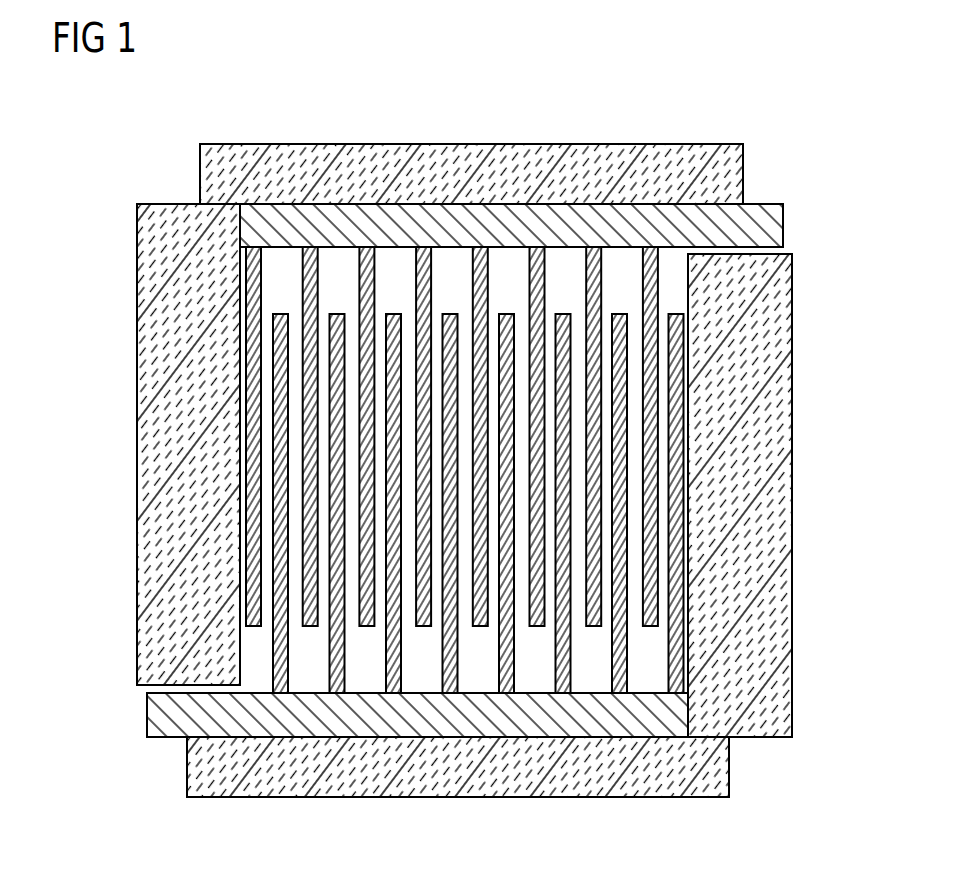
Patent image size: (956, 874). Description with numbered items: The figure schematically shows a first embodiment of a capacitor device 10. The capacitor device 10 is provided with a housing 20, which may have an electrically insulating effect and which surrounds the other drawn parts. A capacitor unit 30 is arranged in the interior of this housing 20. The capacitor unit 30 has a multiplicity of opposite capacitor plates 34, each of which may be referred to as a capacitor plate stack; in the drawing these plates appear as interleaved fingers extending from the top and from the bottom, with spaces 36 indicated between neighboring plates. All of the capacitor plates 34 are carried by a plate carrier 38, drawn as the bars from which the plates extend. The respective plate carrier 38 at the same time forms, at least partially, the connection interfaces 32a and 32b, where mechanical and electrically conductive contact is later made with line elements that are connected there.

The capacitor device 10 is at (112, 156).
The housing 20 is at (308, 153).
The capacitor unit 30 is at (239, 427).
The connection interface 32a is at (781, 187).
The connection interface 32b is at (152, 760).
The capacitor plates 34 is at (478, 245).
The gaps between electrode fingers 36 is at (293, 489).
The plate carrier 38 is at (535, 218).